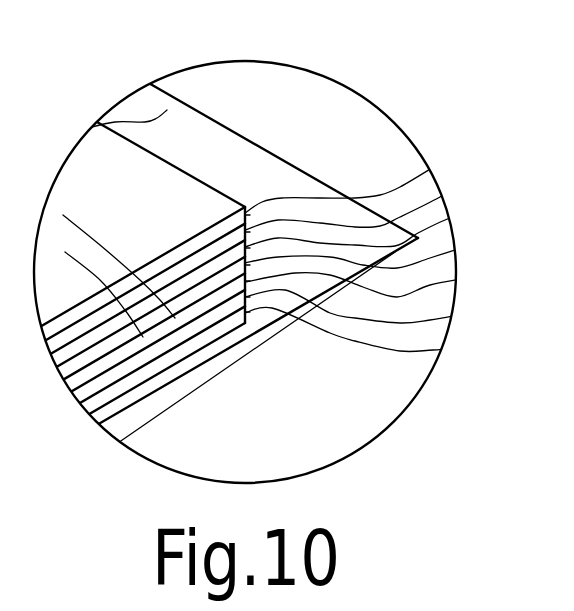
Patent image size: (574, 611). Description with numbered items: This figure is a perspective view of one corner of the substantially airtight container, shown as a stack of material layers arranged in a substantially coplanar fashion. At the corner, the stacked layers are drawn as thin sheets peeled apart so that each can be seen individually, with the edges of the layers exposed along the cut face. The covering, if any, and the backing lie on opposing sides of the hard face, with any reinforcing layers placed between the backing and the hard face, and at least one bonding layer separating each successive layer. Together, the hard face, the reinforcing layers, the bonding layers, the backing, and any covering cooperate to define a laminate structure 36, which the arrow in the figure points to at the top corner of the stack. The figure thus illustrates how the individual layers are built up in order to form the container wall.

The laminate structure 36 is at (245, 182).